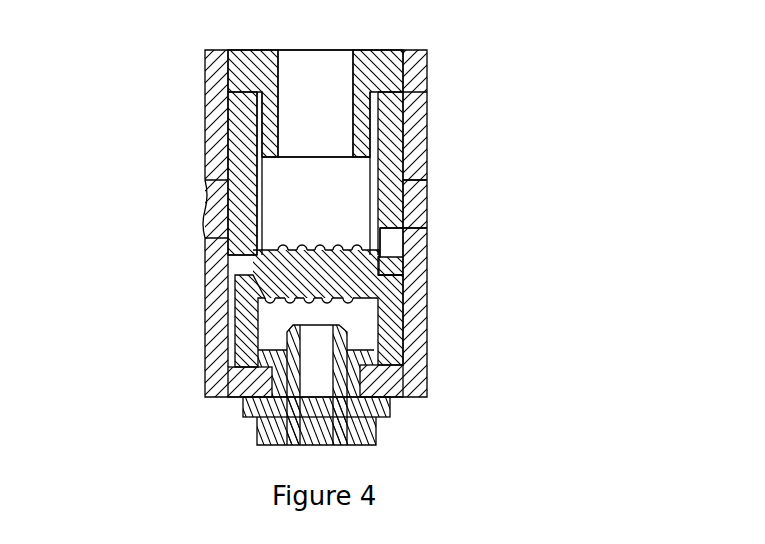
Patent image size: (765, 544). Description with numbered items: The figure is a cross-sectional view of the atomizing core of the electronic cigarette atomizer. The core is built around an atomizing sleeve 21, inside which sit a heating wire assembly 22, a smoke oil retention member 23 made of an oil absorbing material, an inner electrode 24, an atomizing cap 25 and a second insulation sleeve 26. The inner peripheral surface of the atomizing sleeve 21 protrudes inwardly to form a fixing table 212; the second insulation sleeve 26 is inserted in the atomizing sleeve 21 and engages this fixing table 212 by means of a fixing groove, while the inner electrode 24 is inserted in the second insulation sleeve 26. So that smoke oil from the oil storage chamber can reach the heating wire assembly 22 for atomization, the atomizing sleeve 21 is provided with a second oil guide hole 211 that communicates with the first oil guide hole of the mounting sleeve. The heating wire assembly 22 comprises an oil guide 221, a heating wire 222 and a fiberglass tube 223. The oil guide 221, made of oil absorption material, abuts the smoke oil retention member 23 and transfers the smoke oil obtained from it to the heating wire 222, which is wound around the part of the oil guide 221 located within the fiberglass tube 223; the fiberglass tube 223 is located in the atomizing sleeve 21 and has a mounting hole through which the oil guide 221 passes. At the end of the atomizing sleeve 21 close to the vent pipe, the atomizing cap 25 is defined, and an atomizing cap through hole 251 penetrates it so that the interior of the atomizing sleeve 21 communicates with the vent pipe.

The atomizing sleeve 21 is at (427, 109).
The second oil guide hole 211 is at (415, 197).
The fixing table 212 is at (258, 378).
The heating wire assembly 22 is at (419, 299).
The oil guide 221 is at (398, 277).
The heating wire 222 is at (370, 327).
The fiberglass tube 223 is at (400, 231).
The smoke oil retention member 23 is at (400, 157).
The inner electrode 24 is at (257, 433).
The atomizing cap 25 is at (405, 71).
The atomizing cap through hole 251 is at (300, 68).
The second insulation sleeve 26 is at (390, 407).